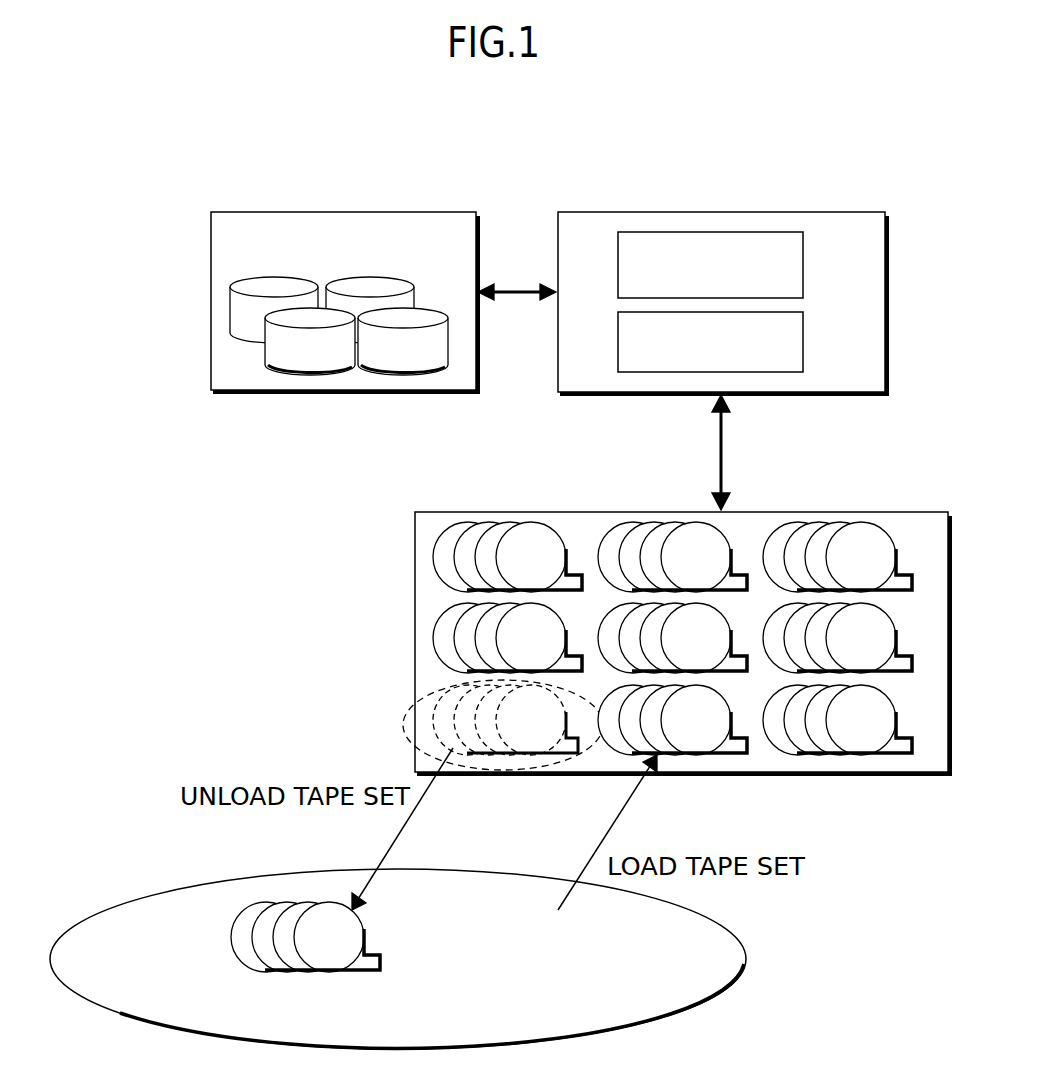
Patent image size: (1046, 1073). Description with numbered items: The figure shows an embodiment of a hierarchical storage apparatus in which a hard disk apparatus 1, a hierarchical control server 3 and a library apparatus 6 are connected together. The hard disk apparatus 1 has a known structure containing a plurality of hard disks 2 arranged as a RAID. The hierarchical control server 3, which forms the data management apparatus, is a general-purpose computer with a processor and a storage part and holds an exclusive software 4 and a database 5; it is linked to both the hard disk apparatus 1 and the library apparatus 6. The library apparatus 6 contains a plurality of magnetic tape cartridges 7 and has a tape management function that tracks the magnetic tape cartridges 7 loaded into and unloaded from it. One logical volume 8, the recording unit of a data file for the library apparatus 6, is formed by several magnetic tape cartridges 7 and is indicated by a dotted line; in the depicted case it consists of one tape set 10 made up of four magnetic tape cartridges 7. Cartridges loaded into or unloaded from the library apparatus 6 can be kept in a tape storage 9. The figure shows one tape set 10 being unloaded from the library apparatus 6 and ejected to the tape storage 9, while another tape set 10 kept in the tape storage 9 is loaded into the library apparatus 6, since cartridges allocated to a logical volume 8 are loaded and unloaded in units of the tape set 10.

The hard disk apparatus 1 is at (211, 227).
The hard disks 2 is at (372, 288).
The hierarchical control server 3 is at (573, 210).
The exclusive software 4 is at (808, 265).
The database 5 is at (616, 349).
The library apparatus 6 is at (411, 533).
The magnetic tape cartridge 7 is at (874, 660).
The logical volume 8 is at (432, 688).
The tape storage 9 is at (245, 870).
The tape set 10 is at (711, 760).